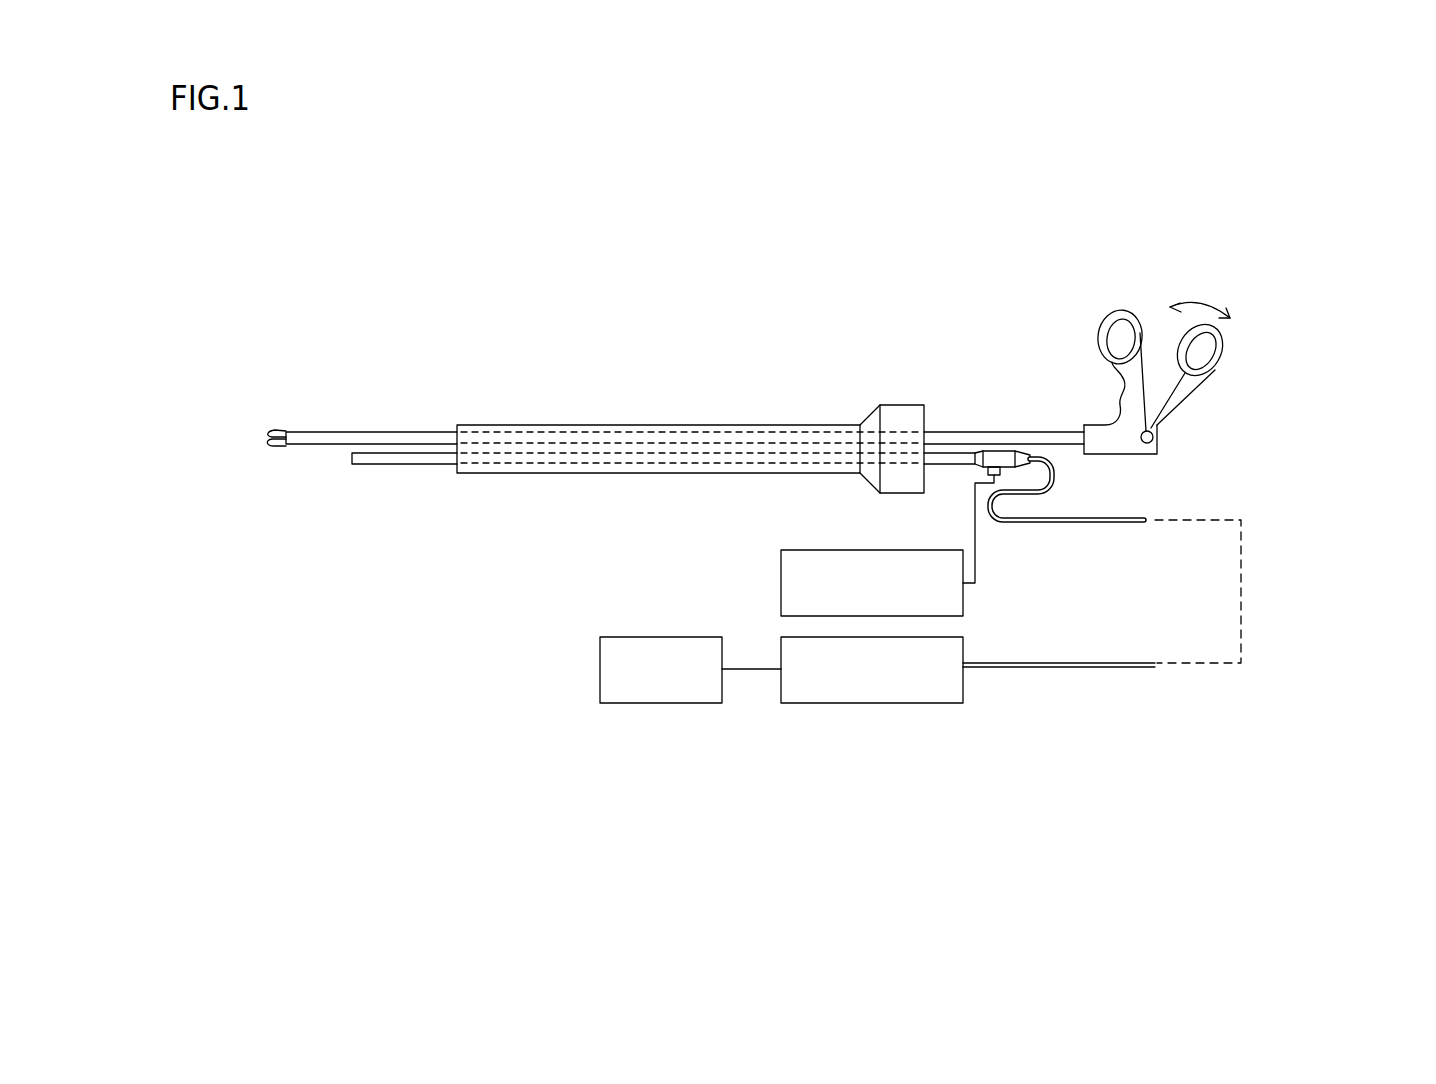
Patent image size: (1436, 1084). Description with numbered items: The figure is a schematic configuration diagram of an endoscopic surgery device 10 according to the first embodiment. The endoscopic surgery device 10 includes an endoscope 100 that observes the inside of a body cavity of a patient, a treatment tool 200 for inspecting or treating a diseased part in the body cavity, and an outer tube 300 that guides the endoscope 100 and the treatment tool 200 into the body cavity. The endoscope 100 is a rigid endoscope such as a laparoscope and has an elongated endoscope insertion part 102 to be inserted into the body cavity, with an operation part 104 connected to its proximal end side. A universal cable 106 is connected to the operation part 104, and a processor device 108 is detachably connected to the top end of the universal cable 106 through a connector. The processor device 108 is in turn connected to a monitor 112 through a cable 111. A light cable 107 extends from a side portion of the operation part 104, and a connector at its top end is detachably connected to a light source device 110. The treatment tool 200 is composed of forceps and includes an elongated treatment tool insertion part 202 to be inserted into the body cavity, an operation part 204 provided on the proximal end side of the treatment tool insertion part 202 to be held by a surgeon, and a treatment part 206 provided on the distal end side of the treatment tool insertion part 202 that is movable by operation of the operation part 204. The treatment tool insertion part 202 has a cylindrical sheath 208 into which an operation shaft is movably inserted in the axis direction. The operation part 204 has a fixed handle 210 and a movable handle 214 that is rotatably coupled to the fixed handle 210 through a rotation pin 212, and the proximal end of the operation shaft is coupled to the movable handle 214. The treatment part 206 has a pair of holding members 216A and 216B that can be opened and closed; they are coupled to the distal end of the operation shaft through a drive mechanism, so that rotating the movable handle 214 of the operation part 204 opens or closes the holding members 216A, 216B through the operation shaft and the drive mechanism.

The endoscopic surgery device 10 is at (612, 305).
The outer tube 300 is at (697, 402).
The treatment tool 200 is at (1158, 281).
The treatment tool insertion part 202 is at (443, 419).
The operation part 204 is at (1071, 347).
The treatment part 206 is at (287, 421).
The sheath 208 is at (378, 432).
The fixed handle 210 is at (1110, 313).
The rotation pin 212 is at (1154, 437).
The movable handle 214 is at (1222, 355).
The holding member 216A is at (269, 428).
The holding member 216B is at (269, 447).
The endoscope 100 is at (1039, 541).
The endoscope insertion part 102 is at (440, 465).
The operation part 104 is at (1000, 457).
The universal cable 106 is at (1112, 519).
The light cable 107 is at (975, 520).
The processor device 108 is at (873, 704).
The light source device 110 is at (781, 580).
The cable 111 is at (752, 672).
The monitor 112 is at (658, 704).